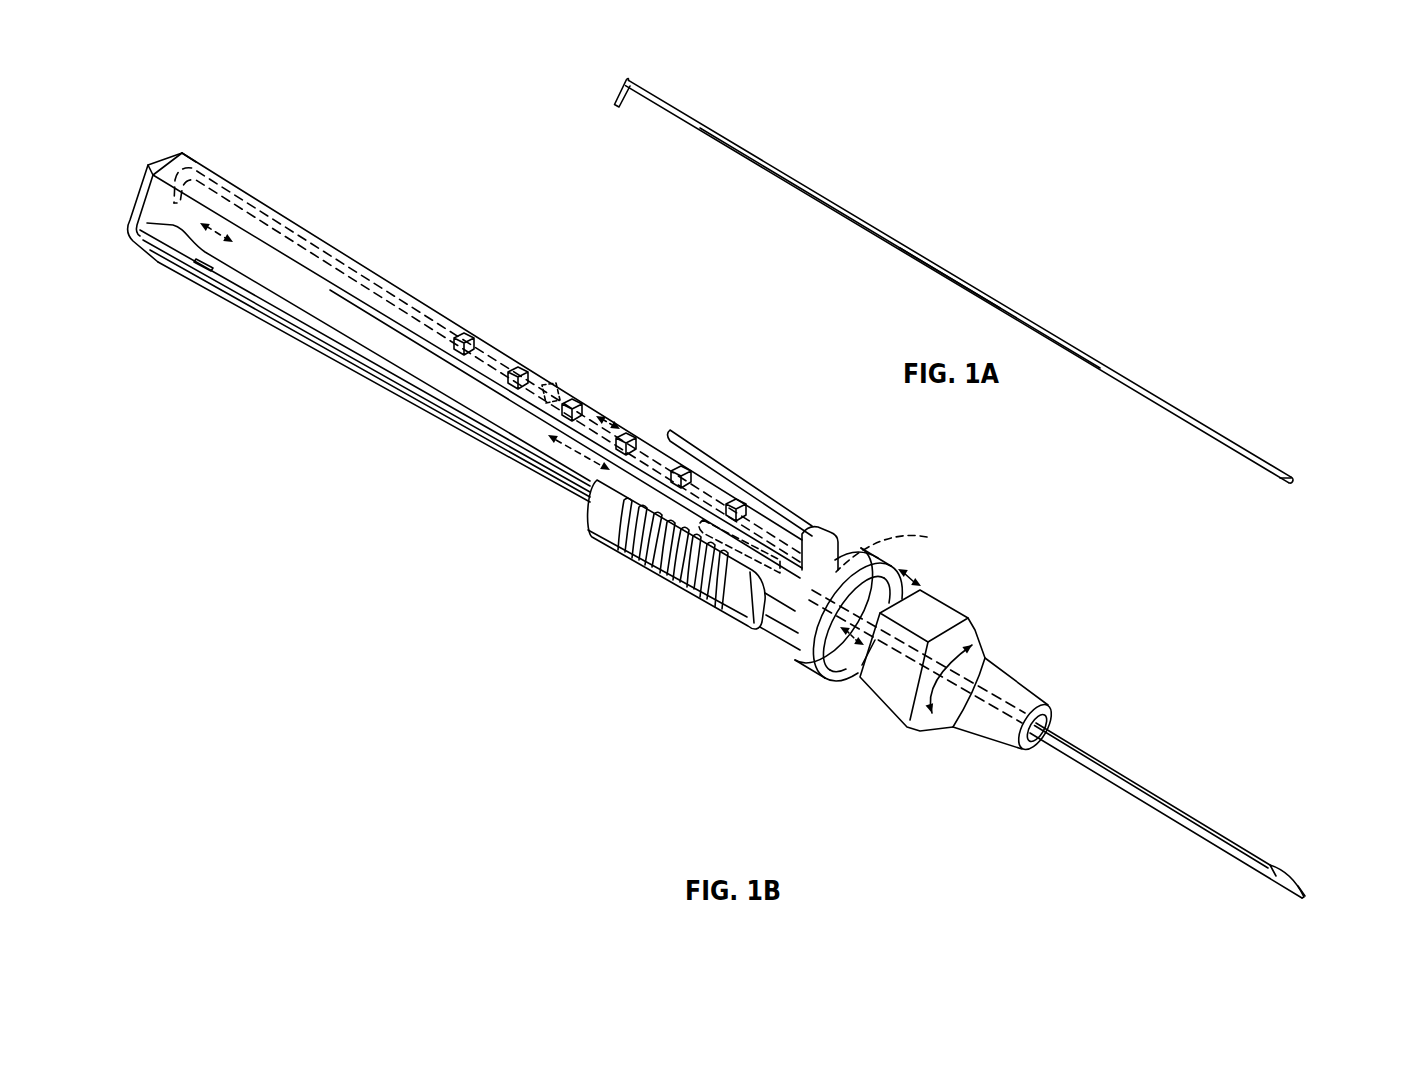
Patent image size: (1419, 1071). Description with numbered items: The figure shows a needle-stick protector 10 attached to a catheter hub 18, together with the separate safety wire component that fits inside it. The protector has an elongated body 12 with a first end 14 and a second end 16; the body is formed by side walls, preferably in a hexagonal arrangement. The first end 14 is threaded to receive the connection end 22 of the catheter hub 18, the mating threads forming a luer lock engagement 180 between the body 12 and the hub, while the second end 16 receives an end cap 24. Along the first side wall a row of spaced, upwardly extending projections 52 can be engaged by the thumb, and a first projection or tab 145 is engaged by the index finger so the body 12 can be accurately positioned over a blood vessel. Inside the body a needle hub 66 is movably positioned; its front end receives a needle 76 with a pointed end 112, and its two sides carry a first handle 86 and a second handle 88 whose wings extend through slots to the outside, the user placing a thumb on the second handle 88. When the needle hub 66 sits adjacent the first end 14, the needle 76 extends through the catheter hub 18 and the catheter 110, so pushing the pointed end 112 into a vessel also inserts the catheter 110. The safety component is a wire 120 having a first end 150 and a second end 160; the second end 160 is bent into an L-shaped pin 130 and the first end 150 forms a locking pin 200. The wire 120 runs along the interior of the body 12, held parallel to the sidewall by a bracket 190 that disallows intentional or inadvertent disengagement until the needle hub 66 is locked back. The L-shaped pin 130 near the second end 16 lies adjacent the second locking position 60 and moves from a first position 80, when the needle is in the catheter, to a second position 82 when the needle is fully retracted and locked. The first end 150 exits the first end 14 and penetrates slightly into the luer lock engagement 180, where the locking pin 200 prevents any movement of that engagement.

In FIG. 1B, the needle-stick protector 10 is at (636, 305).
In FIG. 1B, the body 12 is at (432, 303).
In FIG. 1B, the first end 14 is at (866, 557).
In FIG. 1B, the second end 16 is at (182, 152).
In FIG. 1B, the catheter hub 18 is at (957, 607).
In FIG. 1B, the connection end 22 is at (861, 664).
In FIG. 1B, the end cap 24 is at (150, 165).
In FIG. 1B, the projections 52 is at (597, 404).
In FIG. 1B, the second locking position 60 is at (172, 241).
In FIG. 1B, the needle hub 66 is at (622, 516).
In FIG. 1B, the needle 76 is at (1290, 876).
In FIG. 1B, the first position 80 is at (237, 276).
In FIG. 1B, the second position 82 is at (170, 186).
In FIG. 1B, the first handle 86 is at (790, 498).
In FIG. 1B, the second handle 88 is at (727, 602).
In FIG. 1B, the catheter 110 is at (1157, 791).
In FIG. 1B, the pointed end 112 is at (1313, 897).
In FIG. 1B, the wire 120 is at (378, 293).
In FIG. 1A, the wire 120 is at (968, 283).
In FIG. 1B, the L-shaped pin 130 is at (245, 266).
In FIG. 1A, the L-shaped pin 130 is at (614, 96).
In FIG. 1B, the first projection or tab 145 is at (820, 528).
In FIG. 1B, the first end of the wire 150 is at (856, 552).
In FIG. 1A, the first end of the wire 150 is at (1268, 466).
In FIG. 1A, the second end of the wire 160 is at (655, 97).
In FIG. 1B, the luer lock engagement 180 is at (920, 573).
In FIG. 1B, the bracket 190 is at (549, 384).
In FIG. 1B, the locking pin 200 is at (905, 548).
In FIG. 1A, the locking pin 200 is at (1282, 481).